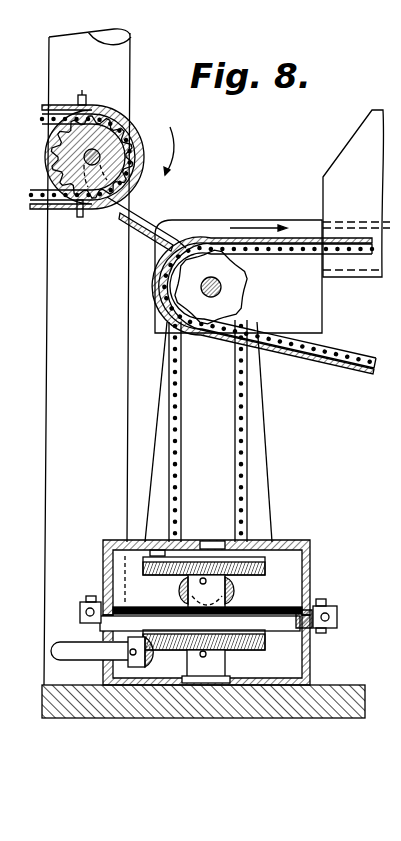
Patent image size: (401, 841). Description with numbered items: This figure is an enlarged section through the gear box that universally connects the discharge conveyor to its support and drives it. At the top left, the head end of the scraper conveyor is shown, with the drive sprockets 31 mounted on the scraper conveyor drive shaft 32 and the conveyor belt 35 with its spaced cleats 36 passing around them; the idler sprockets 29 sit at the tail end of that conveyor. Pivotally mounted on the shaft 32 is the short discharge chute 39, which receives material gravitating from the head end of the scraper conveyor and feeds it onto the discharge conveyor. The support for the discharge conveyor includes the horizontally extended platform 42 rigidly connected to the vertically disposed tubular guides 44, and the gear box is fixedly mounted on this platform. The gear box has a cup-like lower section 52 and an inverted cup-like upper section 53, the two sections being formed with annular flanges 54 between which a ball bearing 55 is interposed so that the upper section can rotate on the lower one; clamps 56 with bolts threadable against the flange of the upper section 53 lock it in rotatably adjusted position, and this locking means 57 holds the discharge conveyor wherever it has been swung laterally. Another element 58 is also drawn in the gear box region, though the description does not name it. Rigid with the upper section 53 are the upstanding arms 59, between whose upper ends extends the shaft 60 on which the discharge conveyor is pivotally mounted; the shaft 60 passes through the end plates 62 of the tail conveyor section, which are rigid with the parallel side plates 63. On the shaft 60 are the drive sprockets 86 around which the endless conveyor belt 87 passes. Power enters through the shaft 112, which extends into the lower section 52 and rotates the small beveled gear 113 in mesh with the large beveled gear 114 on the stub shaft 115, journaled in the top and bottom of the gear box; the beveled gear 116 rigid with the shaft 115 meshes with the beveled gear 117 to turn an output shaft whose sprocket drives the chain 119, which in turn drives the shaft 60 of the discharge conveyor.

The idler sprockets 29 is at (60, 158).
The drive sprockets 31 is at (45, 116).
The scraper conveyor drive shaft 32 is at (97, 144).
The conveyor belt 35 is at (47, 106).
The cleats 36 is at (82, 90).
The discharge chute 39 is at (123, 220).
The platform 42 is at (210, 719).
The tubular guides 44 is at (47, 445).
The lower gear box section 52 is at (311, 668).
The upper gear box section 53 is at (311, 565).
The annular flanges 54 is at (338, 612).
The ball bearing 55 is at (324, 605).
The clamps 56 is at (323, 630).
The locking means 57 is at (330, 619).
The horizontal shaft 58 is at (290, 622).
The upstanding arms 59 is at (270, 490).
The shaft 60 is at (222, 287).
The end plates 62 is at (322, 310).
The side plates 63 is at (323, 190).
The drive sprockets 86 is at (188, 297).
The endless conveyor belt 87 is at (368, 340).
The shaft 112 is at (60, 640).
The small beveled gear 113 is at (148, 662).
The large beveled gear 114 is at (204, 651).
The stub shaft 115 is at (227, 667).
The beveled gear 116 is at (158, 550).
The beveled gear 117 is at (180, 594).
The chain 119 is at (181, 462).